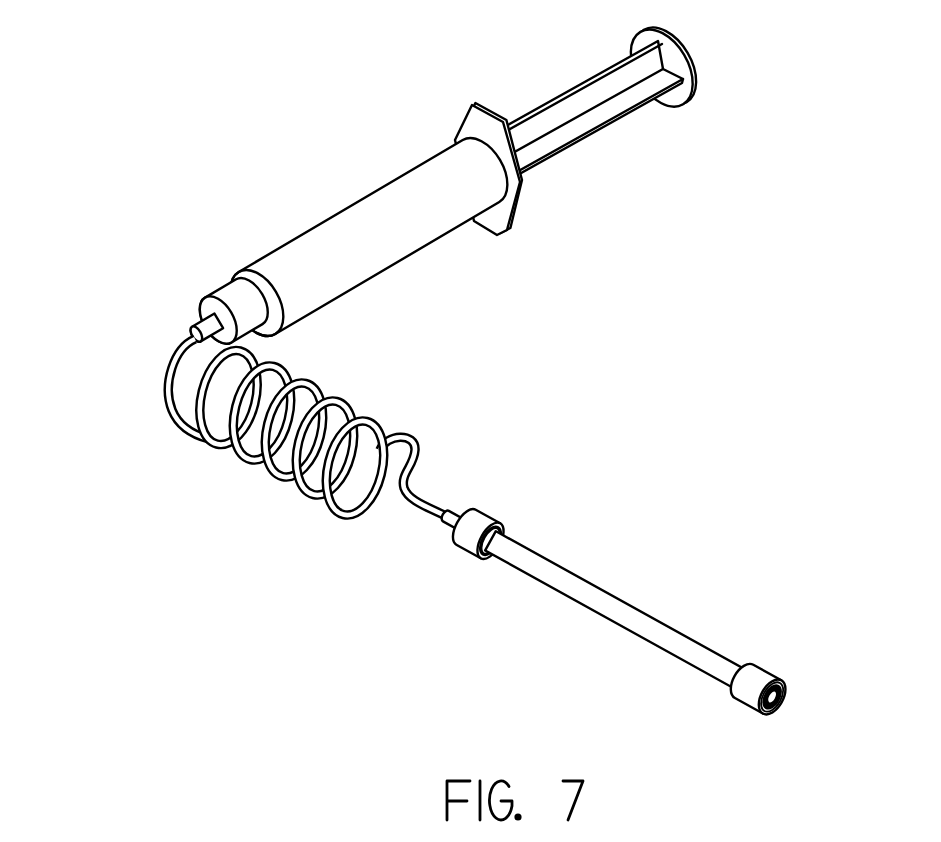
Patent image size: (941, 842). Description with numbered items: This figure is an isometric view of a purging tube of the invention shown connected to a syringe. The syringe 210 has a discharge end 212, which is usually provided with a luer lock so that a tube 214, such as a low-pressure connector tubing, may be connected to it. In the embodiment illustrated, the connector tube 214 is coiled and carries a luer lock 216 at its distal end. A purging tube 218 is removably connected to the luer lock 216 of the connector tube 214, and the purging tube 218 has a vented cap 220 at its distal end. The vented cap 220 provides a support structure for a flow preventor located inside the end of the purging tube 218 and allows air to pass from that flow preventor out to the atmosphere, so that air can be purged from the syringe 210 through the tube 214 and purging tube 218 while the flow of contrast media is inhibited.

The syringe 210 is at (367, 247).
The discharge end 212 is at (223, 295).
The tube 214 is at (180, 420).
The luer lock 216 is at (459, 540).
The purging tube 218 is at (613, 617).
The vented cap 220 is at (762, 674).